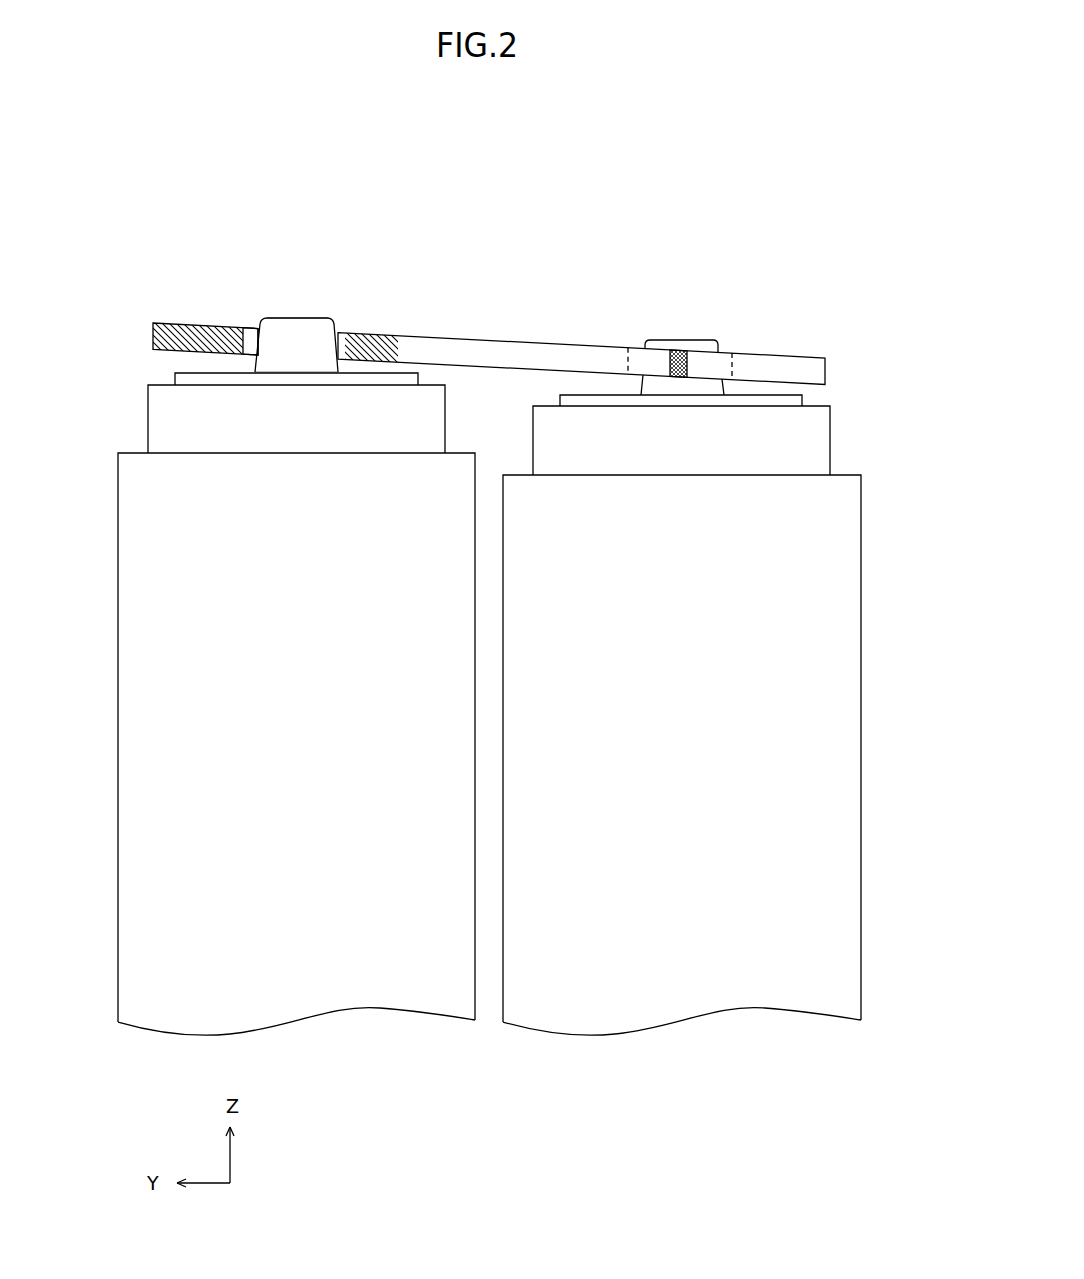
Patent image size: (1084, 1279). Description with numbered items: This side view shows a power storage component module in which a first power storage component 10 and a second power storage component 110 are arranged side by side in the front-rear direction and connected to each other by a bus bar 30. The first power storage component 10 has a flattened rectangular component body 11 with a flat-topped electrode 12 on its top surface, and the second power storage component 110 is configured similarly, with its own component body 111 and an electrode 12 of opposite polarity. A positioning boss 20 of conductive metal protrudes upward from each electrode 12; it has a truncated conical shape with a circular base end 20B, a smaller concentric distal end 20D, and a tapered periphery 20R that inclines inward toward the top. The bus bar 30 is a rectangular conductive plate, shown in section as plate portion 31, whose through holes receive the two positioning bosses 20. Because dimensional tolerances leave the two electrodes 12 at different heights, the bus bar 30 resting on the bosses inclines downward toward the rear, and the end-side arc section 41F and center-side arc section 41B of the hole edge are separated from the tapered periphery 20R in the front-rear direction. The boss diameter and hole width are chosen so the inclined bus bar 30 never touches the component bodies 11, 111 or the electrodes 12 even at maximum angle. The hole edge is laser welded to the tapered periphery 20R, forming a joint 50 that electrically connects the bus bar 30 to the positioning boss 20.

The first power storage component 10 is at (118, 628).
The component body 11 is at (155, 580).
The electrode 12 is at (178, 380).
The positioning boss 20 is at (407, 321).
The distal end 20D is at (310, 317).
The tapered periphery 20R is at (312, 337).
The base end 20B is at (283, 373).
The bus bar 30 is at (485, 306).
The bus bar body 31 is at (505, 340).
The end-side arc section 41F is at (252, 348).
The center-side arc section 41B is at (344, 331).
The joint 50 is at (672, 357).
The second power storage component 110 is at (862, 660).
The cell case of adjacent battery cell 111 is at (835, 607).